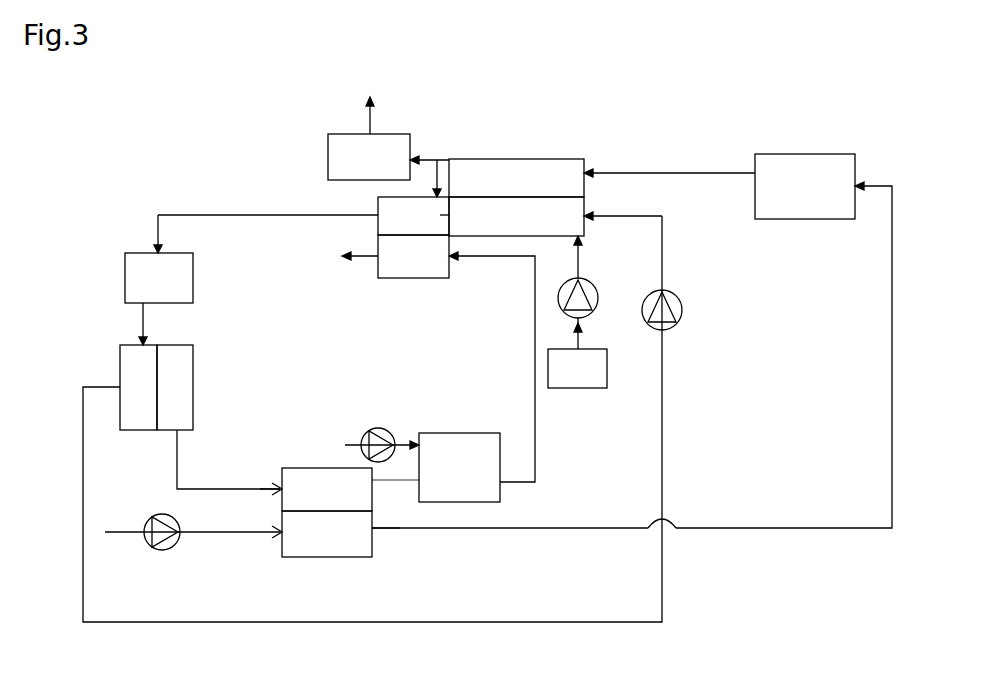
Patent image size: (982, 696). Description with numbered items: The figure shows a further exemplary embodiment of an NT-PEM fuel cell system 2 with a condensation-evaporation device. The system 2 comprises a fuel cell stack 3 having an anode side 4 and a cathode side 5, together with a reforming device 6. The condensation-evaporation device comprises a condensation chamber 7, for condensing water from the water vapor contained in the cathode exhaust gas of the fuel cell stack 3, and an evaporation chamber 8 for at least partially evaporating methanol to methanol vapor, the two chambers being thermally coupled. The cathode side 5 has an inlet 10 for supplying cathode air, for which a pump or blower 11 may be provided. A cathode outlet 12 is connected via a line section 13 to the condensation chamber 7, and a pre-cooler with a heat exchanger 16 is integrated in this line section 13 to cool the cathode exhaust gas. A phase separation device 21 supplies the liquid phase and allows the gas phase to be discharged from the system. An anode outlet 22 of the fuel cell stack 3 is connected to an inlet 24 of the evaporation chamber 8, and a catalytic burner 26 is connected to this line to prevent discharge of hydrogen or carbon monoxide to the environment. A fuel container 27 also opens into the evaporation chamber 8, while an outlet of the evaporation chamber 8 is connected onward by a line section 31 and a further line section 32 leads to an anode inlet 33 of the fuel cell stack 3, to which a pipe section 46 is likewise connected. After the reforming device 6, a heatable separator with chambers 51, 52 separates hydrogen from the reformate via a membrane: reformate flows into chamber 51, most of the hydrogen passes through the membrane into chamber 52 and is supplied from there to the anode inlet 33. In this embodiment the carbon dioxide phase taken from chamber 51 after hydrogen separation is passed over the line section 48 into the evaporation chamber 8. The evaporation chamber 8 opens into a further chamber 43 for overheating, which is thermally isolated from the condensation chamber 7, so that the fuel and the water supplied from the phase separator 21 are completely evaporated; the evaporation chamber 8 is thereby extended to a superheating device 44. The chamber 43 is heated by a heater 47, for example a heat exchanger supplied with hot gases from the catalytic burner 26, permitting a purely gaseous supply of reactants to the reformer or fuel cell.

The system 2 is at (780, 95).
The fuel cell stack 3 is at (327, 535).
The anode side 4 is at (334, 503).
The cathode side 5 is at (334, 547).
The reforming device 6 is at (159, 299).
The condensation chamber 7 is at (521, 191).
The evaporation chamber 8 is at (521, 232).
The inlet 10 is at (193, 561).
The blower 11 is at (155, 548).
The cathode outlet 12 is at (372, 530).
The line section 13 is at (755, 530).
The heat exchanger 16 is at (719, 186).
The phase separation device 21 is at (369, 138).
The anode outlet 22 is at (372, 483).
The inlet of the evaporation chamber 24 is at (586, 215).
The catalytic burner 26 is at (440, 377).
The fuel container 27 is at (598, 384).
The line section 31 is at (223, 218).
The line section 32 is at (217, 242).
The anode inlet 33 is at (278, 486).
The further chamber 43 is at (413, 216).
The superheating device 44 is at (447, 214).
The pipe section 46 is at (172, 470).
The heater 47 is at (395, 256).
The line section 48 is at (513, 622).
The chamber 51 is at (138, 387).
The chamber 52 is at (175, 387).